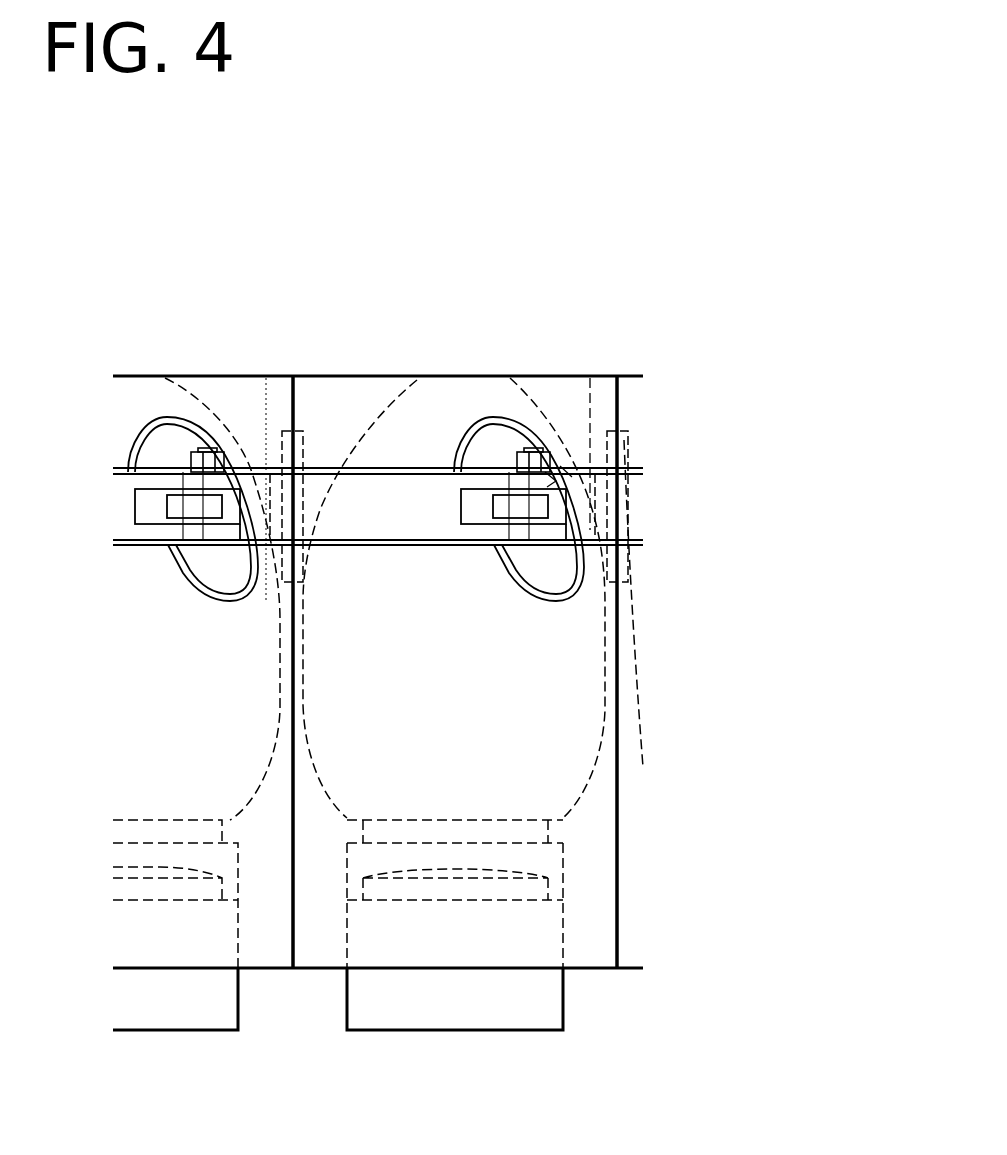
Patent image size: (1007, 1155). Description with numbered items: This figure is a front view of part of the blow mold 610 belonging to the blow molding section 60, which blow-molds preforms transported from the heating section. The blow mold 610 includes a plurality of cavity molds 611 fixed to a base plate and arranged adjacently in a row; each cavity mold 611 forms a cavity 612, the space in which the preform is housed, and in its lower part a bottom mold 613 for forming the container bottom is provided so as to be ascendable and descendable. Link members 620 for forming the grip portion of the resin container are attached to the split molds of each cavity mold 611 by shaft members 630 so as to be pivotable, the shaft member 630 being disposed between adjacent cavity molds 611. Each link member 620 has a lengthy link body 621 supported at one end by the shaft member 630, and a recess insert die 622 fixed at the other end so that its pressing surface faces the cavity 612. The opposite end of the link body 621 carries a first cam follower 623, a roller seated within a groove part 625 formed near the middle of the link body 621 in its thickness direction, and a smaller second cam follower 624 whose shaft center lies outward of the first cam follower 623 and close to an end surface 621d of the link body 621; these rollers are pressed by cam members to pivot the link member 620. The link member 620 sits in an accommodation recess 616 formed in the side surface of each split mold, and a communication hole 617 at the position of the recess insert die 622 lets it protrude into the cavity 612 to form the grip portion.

The blow molding section 60 is at (613, 188).
The blow mold 610 is at (229, 310).
The cavity mold 611 is at (593, 907).
The cavity 612 is at (150, 403).
The bottom mold 613 is at (553, 1010).
The accommodation recess 616 is at (327, 468).
The communication hole 617 is at (487, 415).
The link member 620 is at (459, 444).
The link body 621 is at (396, 483).
The end surface of the link body 621d is at (556, 481).
The recess insert die 622 is at (503, 435).
The first cam follower 623 is at (535, 507).
The second cam follower 624 is at (543, 463).
The groove part 625 is at (478, 515).
The shaft member 630 is at (284, 430).